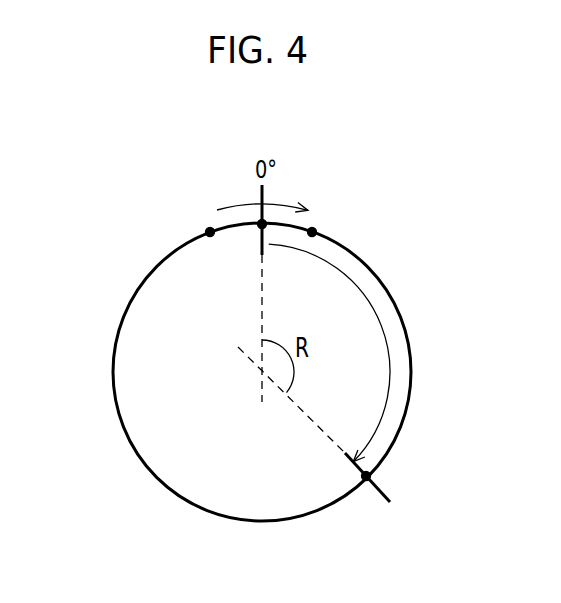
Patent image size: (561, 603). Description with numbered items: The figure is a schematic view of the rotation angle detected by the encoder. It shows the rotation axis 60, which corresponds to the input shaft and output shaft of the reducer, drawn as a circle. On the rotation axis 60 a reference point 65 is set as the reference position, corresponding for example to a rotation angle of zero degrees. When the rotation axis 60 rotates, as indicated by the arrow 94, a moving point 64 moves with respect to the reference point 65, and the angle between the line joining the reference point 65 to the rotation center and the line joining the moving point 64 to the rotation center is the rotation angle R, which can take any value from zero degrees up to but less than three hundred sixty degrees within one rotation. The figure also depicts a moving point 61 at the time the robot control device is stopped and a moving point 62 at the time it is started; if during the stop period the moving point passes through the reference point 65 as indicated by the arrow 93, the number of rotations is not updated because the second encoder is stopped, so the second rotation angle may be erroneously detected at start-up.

The rotation axis 60 is at (157, 477).
The moving point 61 is at (210, 232).
The moving point 62 is at (312, 232).
The moving point 64 is at (366, 476).
The reference point 65 is at (260, 226).
The arrow 93 is at (233, 210).
The arrow 94 is at (380, 320).